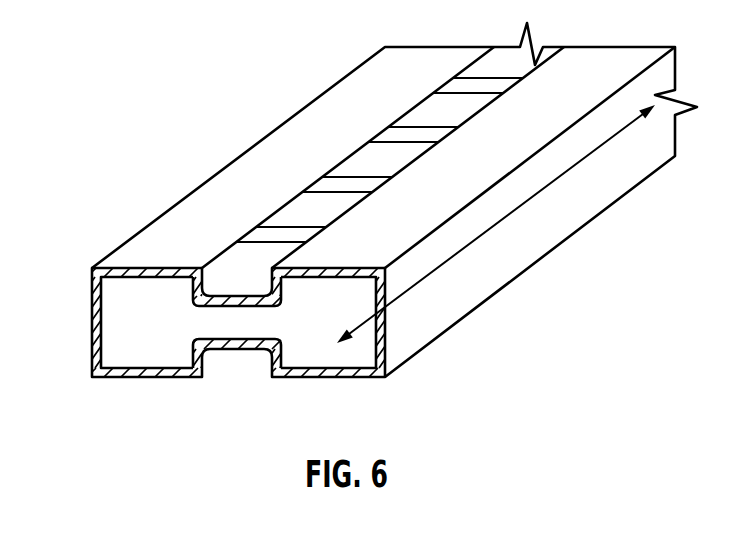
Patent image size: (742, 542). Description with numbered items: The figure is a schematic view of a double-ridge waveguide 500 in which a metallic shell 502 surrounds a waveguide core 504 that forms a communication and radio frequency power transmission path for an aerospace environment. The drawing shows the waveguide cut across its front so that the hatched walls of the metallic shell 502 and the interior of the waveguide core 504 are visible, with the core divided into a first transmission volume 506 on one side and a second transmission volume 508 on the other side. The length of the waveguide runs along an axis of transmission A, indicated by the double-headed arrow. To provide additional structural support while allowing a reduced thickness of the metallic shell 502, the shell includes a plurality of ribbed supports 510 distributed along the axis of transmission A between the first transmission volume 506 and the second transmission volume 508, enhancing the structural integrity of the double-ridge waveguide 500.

The double-ridge waveguide 500 is at (182, 50).
The metallic shell 502 is at (352, 87).
The waveguide core 504 is at (227, 325).
The first transmission volume 506 is at (142, 362).
The second transmission volume 508 is at (312, 360).
The ribbed supports 510 is at (282, 232).
The axis of transmission A is at (440, 268).